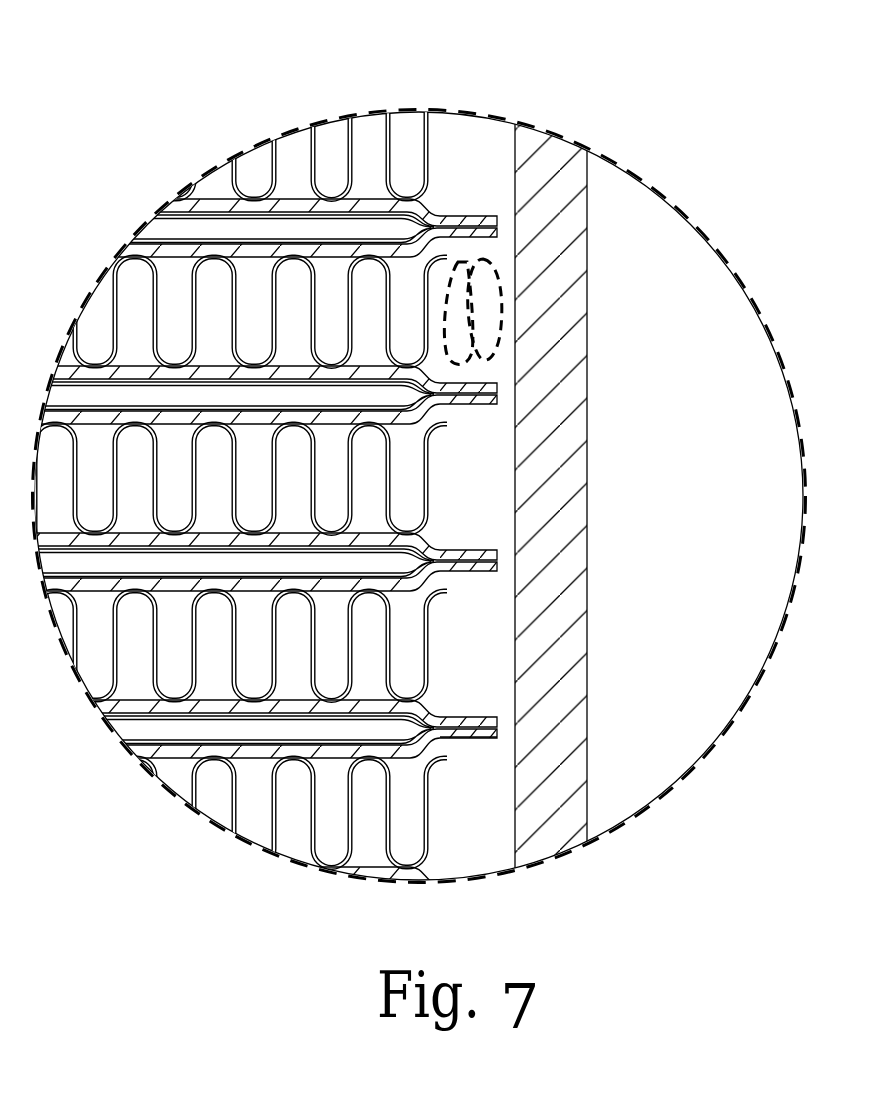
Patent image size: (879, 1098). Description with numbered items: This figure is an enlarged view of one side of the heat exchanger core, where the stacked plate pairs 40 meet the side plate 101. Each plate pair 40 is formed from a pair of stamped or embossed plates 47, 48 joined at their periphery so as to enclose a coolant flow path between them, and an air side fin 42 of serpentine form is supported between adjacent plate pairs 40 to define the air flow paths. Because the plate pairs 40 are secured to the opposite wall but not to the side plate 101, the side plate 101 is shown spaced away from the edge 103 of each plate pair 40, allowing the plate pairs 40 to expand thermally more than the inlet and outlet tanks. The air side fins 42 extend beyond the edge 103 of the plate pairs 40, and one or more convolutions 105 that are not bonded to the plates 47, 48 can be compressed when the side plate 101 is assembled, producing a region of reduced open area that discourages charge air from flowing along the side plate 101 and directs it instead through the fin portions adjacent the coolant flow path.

The air side fin 42 is at (425, 153).
The plate pair 40 is at (362, 566).
The plate 47 is at (325, 566).
The plate 48 is at (325, 566).
The side plate 101 is at (587, 360).
The edge of plate pair 103 is at (495, 745).
The convolution 105 is at (502, 303).